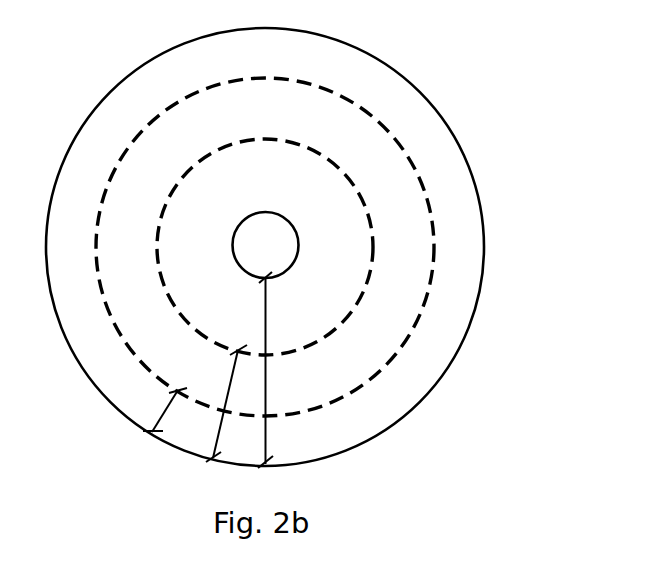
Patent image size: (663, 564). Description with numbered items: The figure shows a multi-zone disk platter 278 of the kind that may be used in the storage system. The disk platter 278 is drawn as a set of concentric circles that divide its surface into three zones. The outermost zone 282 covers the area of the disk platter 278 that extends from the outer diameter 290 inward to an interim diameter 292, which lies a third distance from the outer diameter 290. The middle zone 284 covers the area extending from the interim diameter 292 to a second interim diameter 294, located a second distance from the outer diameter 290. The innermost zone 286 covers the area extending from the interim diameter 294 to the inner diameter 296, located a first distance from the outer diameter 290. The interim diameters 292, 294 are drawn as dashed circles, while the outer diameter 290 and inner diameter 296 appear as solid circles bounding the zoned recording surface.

The disk platter 278 is at (467, 128).
The zone 282 is at (97, 296).
The zone 284 is at (150, 294).
The zone 286 is at (223, 290).
The outer diameter 290 is at (368, 55).
The interim diameter 292 is at (268, 77).
The interim diameter 294 is at (337, 165).
The inner diameter 296 is at (299, 240).